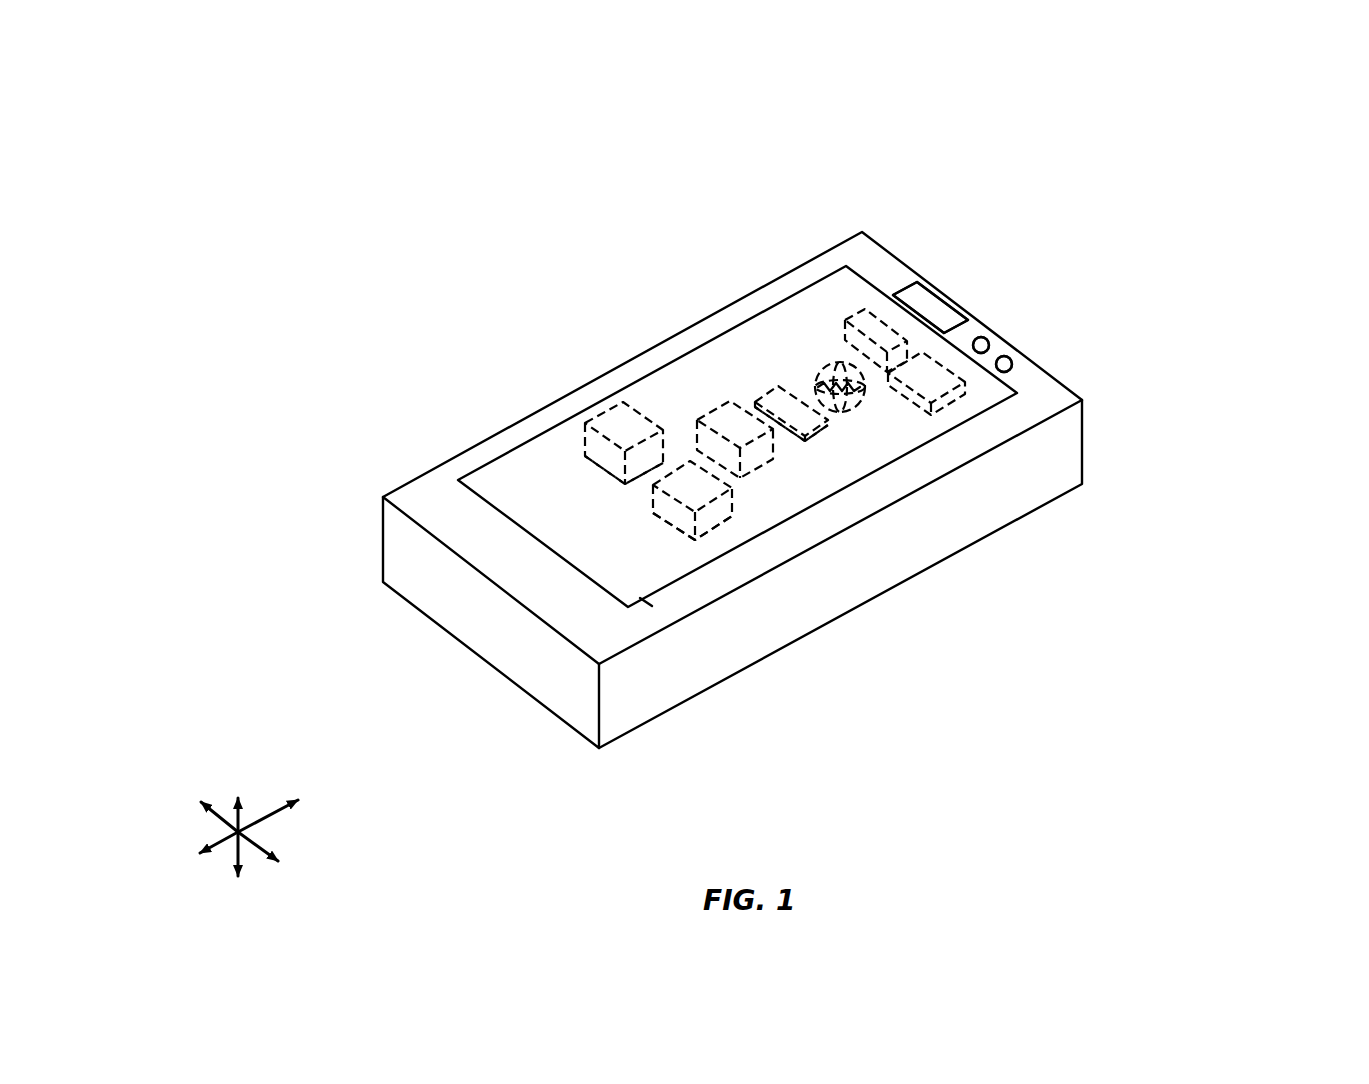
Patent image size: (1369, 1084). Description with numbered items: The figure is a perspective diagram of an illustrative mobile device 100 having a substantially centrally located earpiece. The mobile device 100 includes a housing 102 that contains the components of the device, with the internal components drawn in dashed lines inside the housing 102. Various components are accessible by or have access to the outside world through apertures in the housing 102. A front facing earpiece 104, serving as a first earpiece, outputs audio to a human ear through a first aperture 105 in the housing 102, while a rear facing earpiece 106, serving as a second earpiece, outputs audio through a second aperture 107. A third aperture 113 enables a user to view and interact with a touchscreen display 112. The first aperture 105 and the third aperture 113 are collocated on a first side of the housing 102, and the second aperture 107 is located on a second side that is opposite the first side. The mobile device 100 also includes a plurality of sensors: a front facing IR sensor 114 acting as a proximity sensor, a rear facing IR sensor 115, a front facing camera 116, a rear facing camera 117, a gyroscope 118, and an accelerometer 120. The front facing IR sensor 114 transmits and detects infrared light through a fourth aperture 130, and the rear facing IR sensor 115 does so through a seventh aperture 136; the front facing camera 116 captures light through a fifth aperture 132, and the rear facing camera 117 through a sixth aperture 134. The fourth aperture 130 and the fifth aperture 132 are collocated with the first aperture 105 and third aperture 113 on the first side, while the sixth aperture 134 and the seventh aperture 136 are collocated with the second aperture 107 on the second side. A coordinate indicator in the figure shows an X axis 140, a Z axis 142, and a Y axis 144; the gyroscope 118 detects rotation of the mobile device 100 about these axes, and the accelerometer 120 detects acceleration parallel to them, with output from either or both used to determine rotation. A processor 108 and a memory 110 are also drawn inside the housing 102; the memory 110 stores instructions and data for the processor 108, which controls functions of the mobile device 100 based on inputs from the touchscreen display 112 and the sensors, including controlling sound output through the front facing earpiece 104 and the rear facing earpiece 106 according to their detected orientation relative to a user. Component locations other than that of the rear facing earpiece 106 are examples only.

The mobile device 100 is at (694, 455).
The housing 102 is at (732, 494).
The front facing earpiece 104 is at (1042, 214).
The first aperture 105 is at (830, 210).
The rear facing earpiece 106 is at (977, 504).
The second aperture 107 is at (909, 548).
The processor 108 is at (1039, 459).
The memory 110 is at (798, 255).
The touchscreen display 112 is at (737, 518).
The third aperture 113 is at (754, 710).
The front facing IR sensor 114 is at (1129, 292).
The rear facing IR sensor 115 is at (406, 517).
The front facing camera 116 is at (1152, 372).
The rear facing camera 117 is at (501, 400).
The gyroscope 118 is at (742, 304).
The accelerometer 120 is at (635, 369).
The fourth aperture 130 is at (1073, 263).
The fifth aperture 132 is at (1122, 324).
The sixth aperture 134 is at (464, 430).
The seventh aperture 136 is at (451, 587).
The X axis 140 is at (212, 815).
The Z axis 142 is at (240, 817).
The Y axis 144 is at (278, 813).